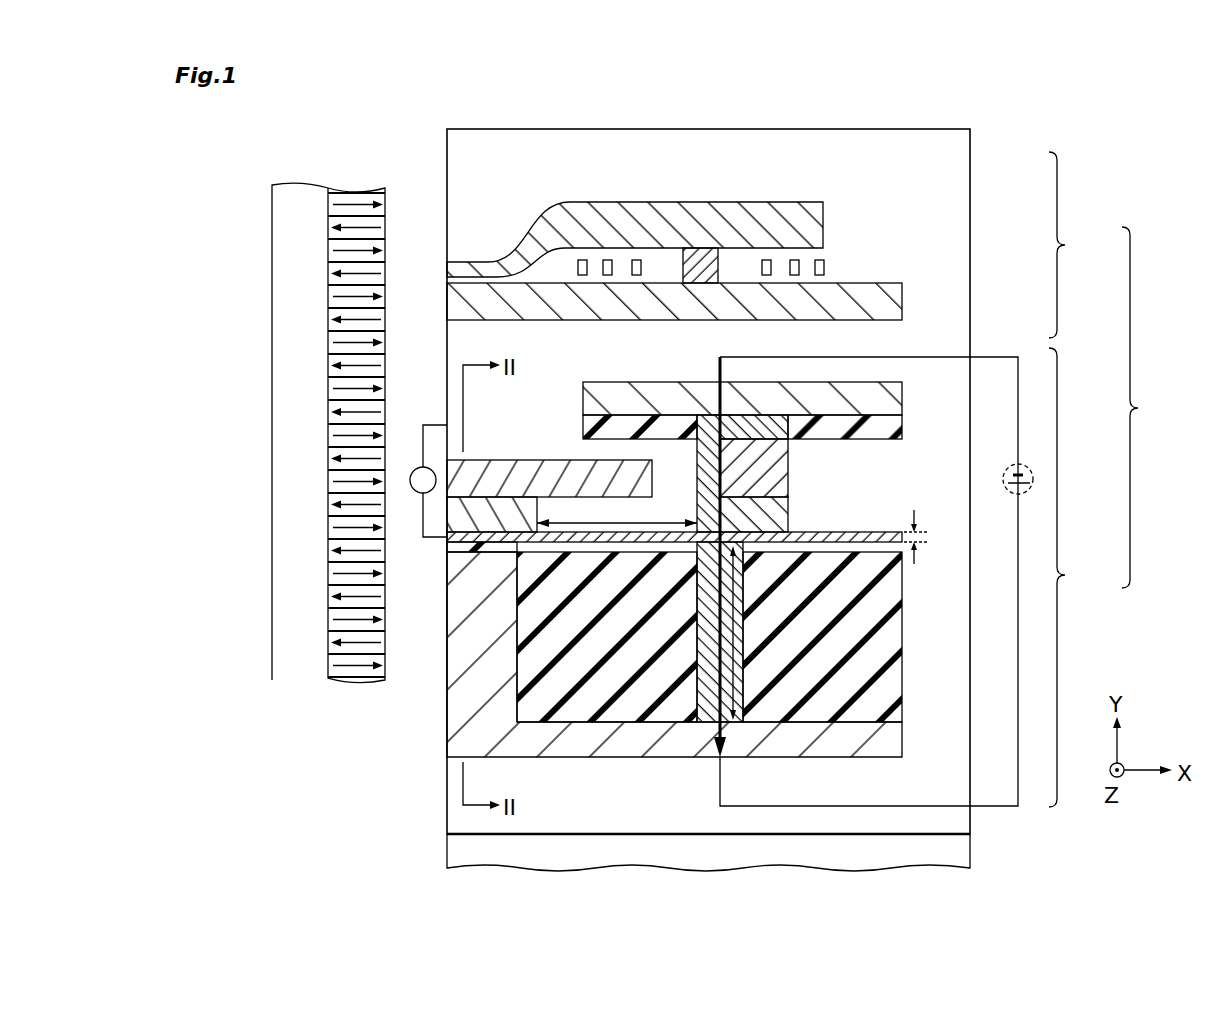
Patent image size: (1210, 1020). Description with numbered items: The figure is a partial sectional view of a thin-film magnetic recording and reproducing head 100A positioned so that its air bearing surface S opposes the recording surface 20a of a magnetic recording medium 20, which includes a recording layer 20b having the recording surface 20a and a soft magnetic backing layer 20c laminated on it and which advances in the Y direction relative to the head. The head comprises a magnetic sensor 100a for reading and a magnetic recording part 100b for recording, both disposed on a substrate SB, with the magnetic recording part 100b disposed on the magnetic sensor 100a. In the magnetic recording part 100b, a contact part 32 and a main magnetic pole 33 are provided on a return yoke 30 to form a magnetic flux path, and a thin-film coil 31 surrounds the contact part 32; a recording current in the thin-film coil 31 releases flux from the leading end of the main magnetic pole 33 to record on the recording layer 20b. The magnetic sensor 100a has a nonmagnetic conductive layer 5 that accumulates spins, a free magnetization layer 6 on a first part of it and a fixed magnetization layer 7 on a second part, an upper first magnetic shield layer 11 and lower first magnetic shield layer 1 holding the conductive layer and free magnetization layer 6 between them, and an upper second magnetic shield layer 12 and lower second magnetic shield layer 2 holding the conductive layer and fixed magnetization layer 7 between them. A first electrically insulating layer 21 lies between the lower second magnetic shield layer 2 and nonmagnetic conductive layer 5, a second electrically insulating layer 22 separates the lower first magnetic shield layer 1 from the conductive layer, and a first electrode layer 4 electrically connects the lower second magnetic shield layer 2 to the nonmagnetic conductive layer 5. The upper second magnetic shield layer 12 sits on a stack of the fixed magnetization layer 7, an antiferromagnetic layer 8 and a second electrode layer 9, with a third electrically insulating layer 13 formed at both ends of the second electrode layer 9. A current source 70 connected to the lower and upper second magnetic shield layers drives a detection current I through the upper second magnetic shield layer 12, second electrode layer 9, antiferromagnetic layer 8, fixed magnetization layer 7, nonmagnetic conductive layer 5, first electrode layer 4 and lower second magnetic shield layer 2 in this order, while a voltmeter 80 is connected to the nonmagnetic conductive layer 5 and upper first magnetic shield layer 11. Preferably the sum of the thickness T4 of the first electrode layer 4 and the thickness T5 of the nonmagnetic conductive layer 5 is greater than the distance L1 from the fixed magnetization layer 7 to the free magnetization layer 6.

The lower first magnetic shield layer 1 is at (478, 660).
The lower second magnetic shield layer 2 is at (903, 740).
The first electrode layer 4 is at (704, 650).
The nonmagnetic conductive layer 5 is at (866, 534).
The free magnetization layer 6 is at (530, 512).
The fixed magnetization layer 7 is at (789, 512).
The antiferromagnetic layer 8 is at (789, 462).
The second electrode layer 9 is at (712, 425).
The upper first magnetic shield layer 11 is at (497, 463).
The upper second magnetic shield layer 12 is at (583, 398).
The third electrically insulating layer 13 is at (583, 430).
The magnetic recording medium 20 is at (352, 476).
The recording surface 20a is at (388, 645).
The recording layer 20b is at (380, 460).
The soft magnetic backing layer 20c is at (305, 670).
The first electrically insulating layer 21 is at (610, 712).
The second electrically insulating layer 22 is at (450, 547).
The return yoke 30 is at (905, 304).
The thin-film coil 31 is at (609, 262).
The contact part 32 is at (707, 258).
The main magnetic pole 33 is at (647, 217).
The current source 70 is at (1008, 466).
The voltmeter 80 is at (419, 467).
The magnetic sensor 100a is at (1085, 577).
The magnetic recording part 100b is at (1085, 245).
The thin-film magnetic recording and reproducing head 100A is at (1159, 407).
The air bearing surface S is at (448, 638).
The substrate SB is at (973, 850).
The detection current I is at (700, 600).
The distance from the fixed magnetization layer to the free magnetization layer L1 is at (643, 518).
The thickness of the first electrode layer T4 is at (737, 628).
The thickness of the nonmagnetic conductive layer T5 is at (925, 540).